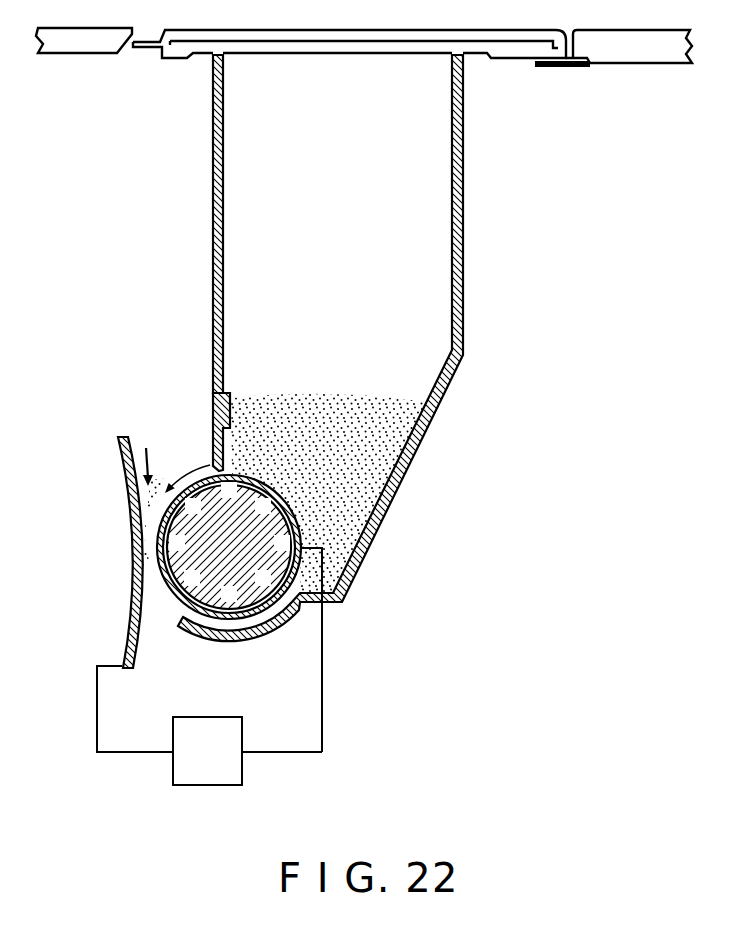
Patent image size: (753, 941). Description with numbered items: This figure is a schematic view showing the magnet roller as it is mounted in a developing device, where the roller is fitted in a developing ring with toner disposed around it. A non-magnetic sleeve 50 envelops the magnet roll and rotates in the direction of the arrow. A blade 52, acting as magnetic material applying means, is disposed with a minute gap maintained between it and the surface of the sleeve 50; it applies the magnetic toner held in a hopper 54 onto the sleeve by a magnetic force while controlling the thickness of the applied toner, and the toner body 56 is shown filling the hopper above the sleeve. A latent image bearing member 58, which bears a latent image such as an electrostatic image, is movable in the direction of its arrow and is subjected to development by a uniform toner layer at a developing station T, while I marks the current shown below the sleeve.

The non-magnetic sleeve 50 is at (268, 612).
The blade 52 is at (208, 464).
The hopper 54 is at (390, 503).
The toner 56 is at (327, 424).
The latent image bearing member 58 is at (146, 496).
The developing station T is at (148, 543).
The current I is at (239, 606).